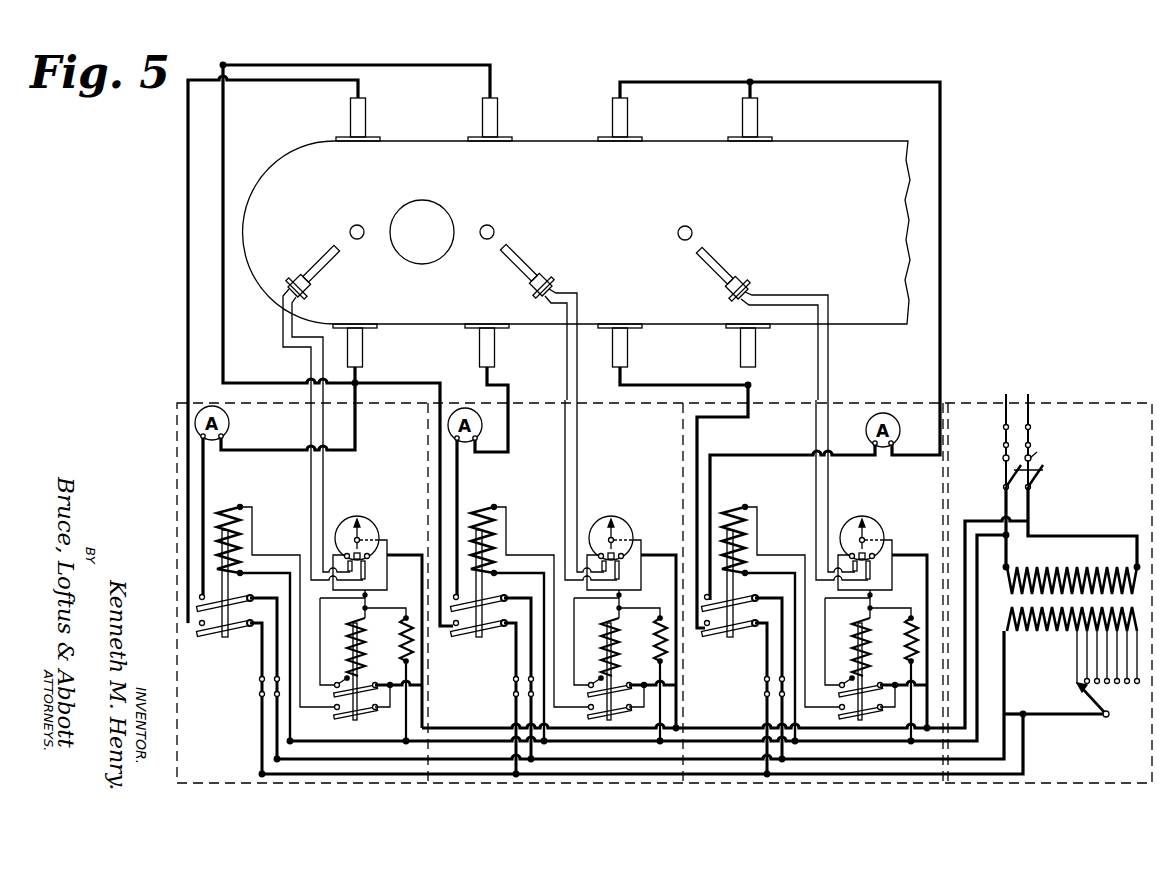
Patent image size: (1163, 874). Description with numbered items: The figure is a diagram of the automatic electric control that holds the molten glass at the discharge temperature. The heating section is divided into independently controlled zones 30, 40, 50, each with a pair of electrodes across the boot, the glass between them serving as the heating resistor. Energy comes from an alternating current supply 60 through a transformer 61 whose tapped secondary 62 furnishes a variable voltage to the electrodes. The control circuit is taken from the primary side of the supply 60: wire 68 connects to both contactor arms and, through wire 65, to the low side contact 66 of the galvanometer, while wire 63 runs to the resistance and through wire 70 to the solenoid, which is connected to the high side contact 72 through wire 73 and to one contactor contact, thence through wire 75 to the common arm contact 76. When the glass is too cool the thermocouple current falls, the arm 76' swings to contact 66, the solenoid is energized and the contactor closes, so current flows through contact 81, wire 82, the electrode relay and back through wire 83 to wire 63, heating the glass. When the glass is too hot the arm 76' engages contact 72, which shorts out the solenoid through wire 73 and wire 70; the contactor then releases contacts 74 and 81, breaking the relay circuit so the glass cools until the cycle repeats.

The zone 30 is at (685, 199).
The zone 40 is at (487, 200).
The zone 50 is at (352, 200).
The alternating current supply 60 is at (1006, 394).
The transformer 61 is at (1072, 589).
The tapped secondary 62 is at (1110, 690).
The wire 63 is at (977, 684).
The wire 65 is at (927, 579).
The low side contact 66 is at (887, 546).
The wire 68 is at (966, 665).
The wire 70 is at (912, 614).
The high side contact 72 is at (857, 562).
The wire 73 is at (836, 591).
The contact 74 is at (840, 689).
The wire 75 is at (826, 631).
The common tap or arm contact 76 is at (848, 508).
The arm 76' is at (887, 504).
The contact 81 is at (840, 713).
The wire 82 is at (808, 663).
The wire 83 is at (795, 647).